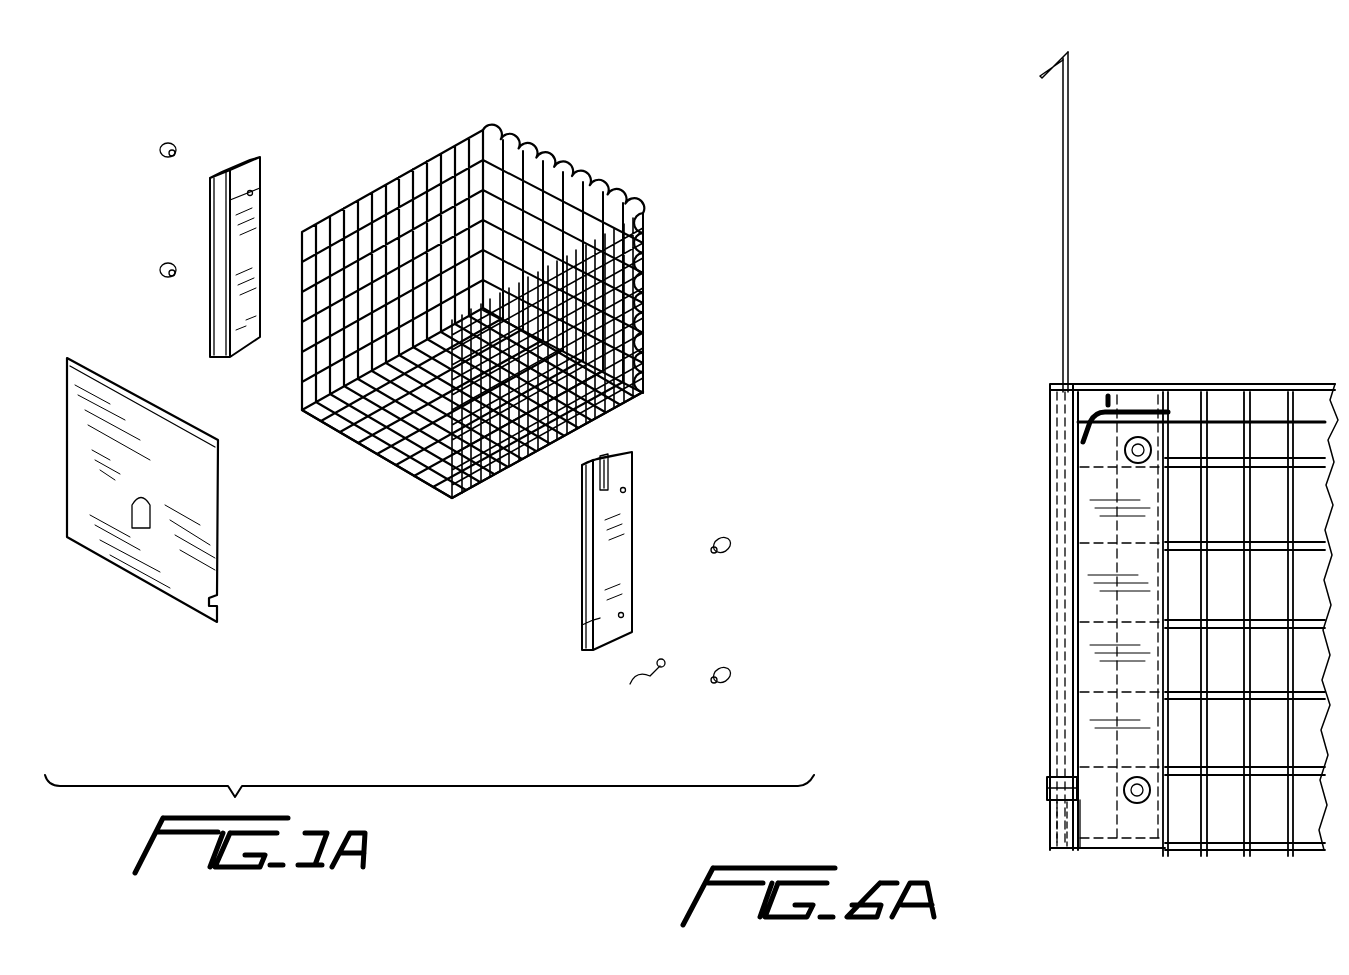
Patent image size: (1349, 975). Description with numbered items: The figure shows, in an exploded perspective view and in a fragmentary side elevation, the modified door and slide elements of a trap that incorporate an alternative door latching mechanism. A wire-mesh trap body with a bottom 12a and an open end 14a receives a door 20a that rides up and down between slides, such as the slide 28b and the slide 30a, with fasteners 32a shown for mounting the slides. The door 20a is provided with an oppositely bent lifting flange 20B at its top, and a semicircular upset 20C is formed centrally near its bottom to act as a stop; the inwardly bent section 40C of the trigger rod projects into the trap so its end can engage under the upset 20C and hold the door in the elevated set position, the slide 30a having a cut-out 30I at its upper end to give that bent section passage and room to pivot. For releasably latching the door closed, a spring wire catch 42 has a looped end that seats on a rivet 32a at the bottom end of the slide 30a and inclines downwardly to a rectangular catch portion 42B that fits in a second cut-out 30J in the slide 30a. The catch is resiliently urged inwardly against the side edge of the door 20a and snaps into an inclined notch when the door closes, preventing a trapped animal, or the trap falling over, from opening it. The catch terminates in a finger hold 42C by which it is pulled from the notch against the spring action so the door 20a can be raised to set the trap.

In FIG. 1A, the wire basket 14a is at (434, 154).
In FIG. 1A, the basket bottom 12a is at (398, 480).
In FIG. 1A, the door 20a is at (126, 575).
In FIG. 6A, the door 20a is at (1052, 258).
In FIG. 1A, the mounting strip 28b is at (264, 165).
In FIG. 1A, the slide 30a is at (578, 590).
In FIG. 6A, the slide 30a is at (1096, 822).
In FIG. 1A, the rivet 32a is at (161, 143).
In FIG. 6A, the rivet 32a is at (1150, 442).
In FIG. 1A, the spring wire catch 42 is at (652, 684).
In FIG. 6A, the spring wire catch 42 is at (1084, 764).
In FIG. 6A, the lifting flange 20B is at (1040, 70).
In FIG. 6A, the semicircular upset 20C is at (1050, 428).
In FIG. 6A, the inwardly bent section 40C is at (1103, 390).
In FIG. 6A, the cut-out 30I is at (1106, 408).
In FIG. 6A, the rectangular catch portion 42B is at (1060, 786).
In FIG. 6A, the second cut-out 30J is at (1060, 802).
In FIG. 6A, the finger hold 42C is at (1052, 832).